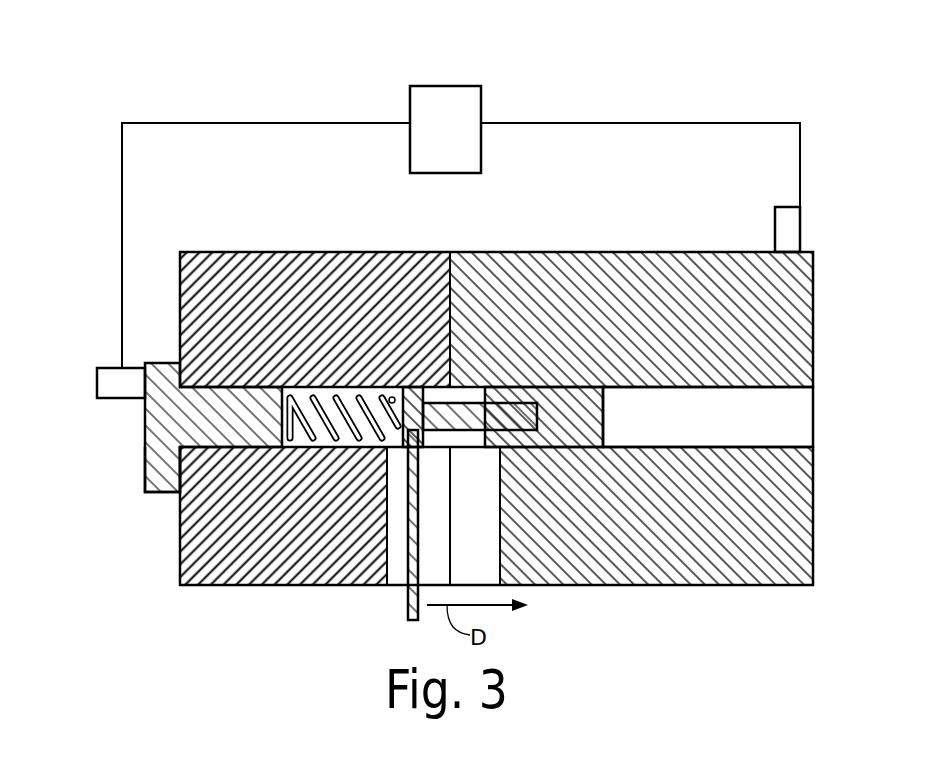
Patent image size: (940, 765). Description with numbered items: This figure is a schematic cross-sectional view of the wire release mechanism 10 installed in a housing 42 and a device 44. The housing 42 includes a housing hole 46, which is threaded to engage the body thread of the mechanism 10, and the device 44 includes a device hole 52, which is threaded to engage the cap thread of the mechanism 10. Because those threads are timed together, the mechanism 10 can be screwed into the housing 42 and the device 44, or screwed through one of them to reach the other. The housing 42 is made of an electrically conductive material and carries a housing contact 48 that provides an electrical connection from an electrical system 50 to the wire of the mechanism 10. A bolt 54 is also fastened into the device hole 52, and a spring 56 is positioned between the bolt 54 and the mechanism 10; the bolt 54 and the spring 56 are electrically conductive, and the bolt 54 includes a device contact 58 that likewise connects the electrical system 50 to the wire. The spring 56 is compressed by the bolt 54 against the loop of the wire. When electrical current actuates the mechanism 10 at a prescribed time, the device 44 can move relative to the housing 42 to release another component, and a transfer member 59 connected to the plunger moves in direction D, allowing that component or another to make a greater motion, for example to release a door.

The wire release mechanism 10 is at (575, 387).
The housing 42 is at (818, 305).
The device 44 is at (176, 540).
The housing hole 46 is at (780, 389).
The housing contact 48 is at (802, 225).
The electrical system 50 is at (450, 86).
The device hole 52 is at (195, 445).
The bolt 54 is at (145, 478).
The spring 56 is at (337, 390).
The device contact 58 is at (107, 368).
The transfer member 59 is at (408, 600).